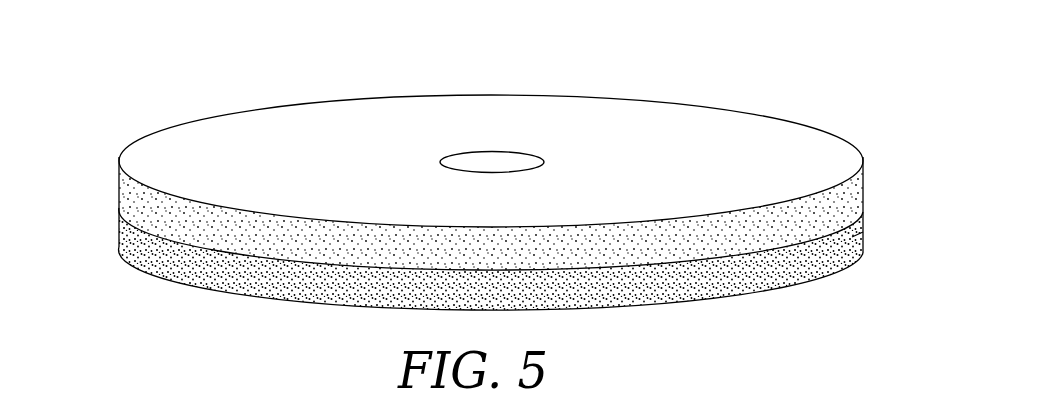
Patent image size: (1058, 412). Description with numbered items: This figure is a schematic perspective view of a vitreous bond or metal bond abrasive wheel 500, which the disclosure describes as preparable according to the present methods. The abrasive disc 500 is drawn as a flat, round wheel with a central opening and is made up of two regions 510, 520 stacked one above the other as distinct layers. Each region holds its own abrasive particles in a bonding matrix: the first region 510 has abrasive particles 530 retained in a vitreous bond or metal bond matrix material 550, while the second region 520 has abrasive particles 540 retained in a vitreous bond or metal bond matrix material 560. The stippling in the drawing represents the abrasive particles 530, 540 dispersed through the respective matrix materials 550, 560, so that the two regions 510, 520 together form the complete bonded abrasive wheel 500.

The vitreous bond or metal bond abrasive wheel 500 is at (286, 56).
The region 510 is at (115, 179).
The region 520 is at (115, 237).
The abrasive particles 530 is at (840, 193).
The abrasive particles 540 is at (842, 253).
The vitreous bond or metal bond matrix material 550 is at (850, 201).
The vitreous bond or metal bond matrix material 560 is at (863, 233).